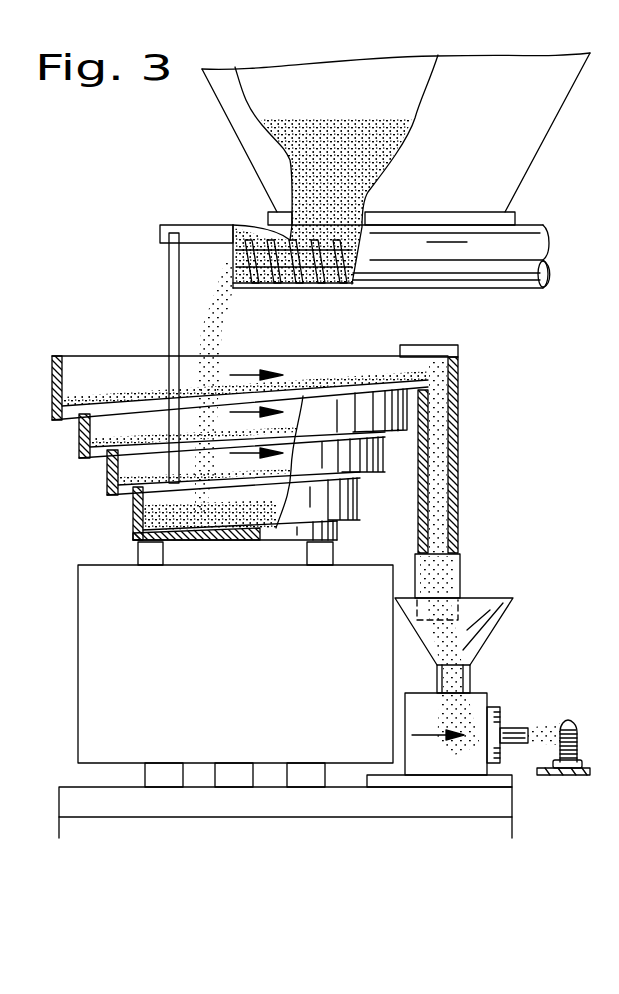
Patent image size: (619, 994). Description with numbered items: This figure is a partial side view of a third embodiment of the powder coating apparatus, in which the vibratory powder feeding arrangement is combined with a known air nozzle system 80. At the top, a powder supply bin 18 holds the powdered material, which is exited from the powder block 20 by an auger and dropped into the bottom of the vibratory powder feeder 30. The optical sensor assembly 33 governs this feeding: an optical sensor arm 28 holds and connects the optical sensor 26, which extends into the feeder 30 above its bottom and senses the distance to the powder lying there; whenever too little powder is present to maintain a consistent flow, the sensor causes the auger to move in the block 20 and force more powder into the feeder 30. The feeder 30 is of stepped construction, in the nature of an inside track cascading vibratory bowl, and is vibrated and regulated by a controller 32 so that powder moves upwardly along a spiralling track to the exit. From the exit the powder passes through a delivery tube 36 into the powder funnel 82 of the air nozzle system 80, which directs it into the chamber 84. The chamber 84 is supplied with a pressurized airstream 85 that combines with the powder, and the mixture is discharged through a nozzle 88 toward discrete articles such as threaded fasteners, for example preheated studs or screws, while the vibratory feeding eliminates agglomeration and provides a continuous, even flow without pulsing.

The powder supply bin 18 is at (482, 147).
The powder block 20 is at (530, 240).
The optical sensor 26 is at (168, 293).
The optical sensor arm 28 is at (210, 226).
The vibratory powder feeder 30 is at (235, 363).
The controller 32 is at (252, 672).
The optical sensor assembly 33 is at (113, 223).
The delivery tube 36 is at (458, 522).
The air nozzle system 80 is at (520, 587).
The powder funnel 82 is at (495, 628).
The chamber 84 is at (468, 703).
The pressurized airstream 85 is at (430, 742).
The nozzle 88 is at (523, 727).